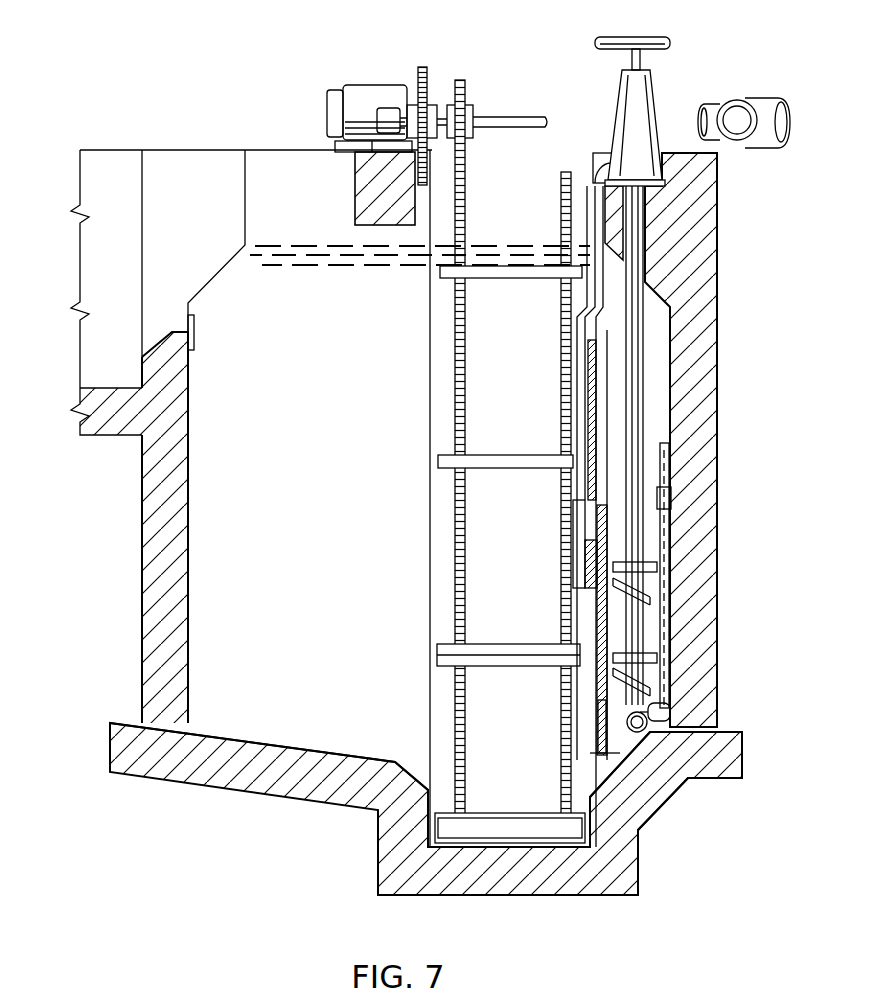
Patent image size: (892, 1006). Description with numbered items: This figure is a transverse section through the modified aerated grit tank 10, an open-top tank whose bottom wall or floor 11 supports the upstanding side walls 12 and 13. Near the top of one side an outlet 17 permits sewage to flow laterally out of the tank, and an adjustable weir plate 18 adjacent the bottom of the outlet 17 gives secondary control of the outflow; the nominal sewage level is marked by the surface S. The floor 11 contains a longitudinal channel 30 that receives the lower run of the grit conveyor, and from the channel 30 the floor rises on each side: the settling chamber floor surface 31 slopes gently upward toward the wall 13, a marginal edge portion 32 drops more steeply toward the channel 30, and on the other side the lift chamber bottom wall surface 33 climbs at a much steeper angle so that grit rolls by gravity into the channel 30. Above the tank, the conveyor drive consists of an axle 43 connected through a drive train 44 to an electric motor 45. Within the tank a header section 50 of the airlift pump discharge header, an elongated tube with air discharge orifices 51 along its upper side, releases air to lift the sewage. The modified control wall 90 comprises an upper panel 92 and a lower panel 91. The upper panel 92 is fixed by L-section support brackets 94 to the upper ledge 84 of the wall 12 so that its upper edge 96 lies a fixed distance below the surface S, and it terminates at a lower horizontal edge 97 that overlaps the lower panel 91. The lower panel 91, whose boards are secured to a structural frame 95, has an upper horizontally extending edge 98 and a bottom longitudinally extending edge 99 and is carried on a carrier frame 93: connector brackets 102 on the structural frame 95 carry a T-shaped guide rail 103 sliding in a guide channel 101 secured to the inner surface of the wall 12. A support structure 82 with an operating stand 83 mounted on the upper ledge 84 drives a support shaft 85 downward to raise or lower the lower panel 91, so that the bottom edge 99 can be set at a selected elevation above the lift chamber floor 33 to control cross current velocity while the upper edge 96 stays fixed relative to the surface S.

The aerated grit tank 10 is at (211, 137).
The bottom wall or floor 11 is at (275, 806).
The side wall 12 is at (718, 357).
The side wall 13 is at (145, 468).
The outlet 17 is at (158, 243).
The weir plate 18 is at (195, 330).
The channel 30 is at (505, 835).
The settling chamber floor surface 31 is at (247, 728).
The marginal edge portion 32 is at (400, 760).
The lift chamber bottom wall surface 33 is at (665, 803).
The axle 43 is at (523, 122).
The drive train 44 is at (428, 65).
The electric motor 45 is at (356, 96).
The header section 50 is at (680, 722).
The air discharge orifice 51 is at (648, 708).
The support structure 82 is at (609, 72).
The operating stand 83 is at (638, 88).
The upper ledge 84 is at (610, 163).
The support shaft 85 is at (633, 328).
The control wall 90 is at (571, 398).
The lower panel 91 is at (602, 612).
The upper panel 92 is at (590, 424).
The carrier frame 93 is at (655, 651).
The support bracket 94 is at (579, 338).
The structural frame 95 is at (625, 687).
The upper edge 96 is at (590, 326).
The lower horizontal edge 97 is at (598, 614).
The upper horizontally extending edge 98 is at (547, 501).
The bottom longitudinally extending edge 99 is at (593, 752).
The guide channel 101 is at (669, 530).
The connector bracket 102 is at (647, 580).
The T-shaped guide rail 103 is at (660, 500).
The sewage surface S is at (312, 243).